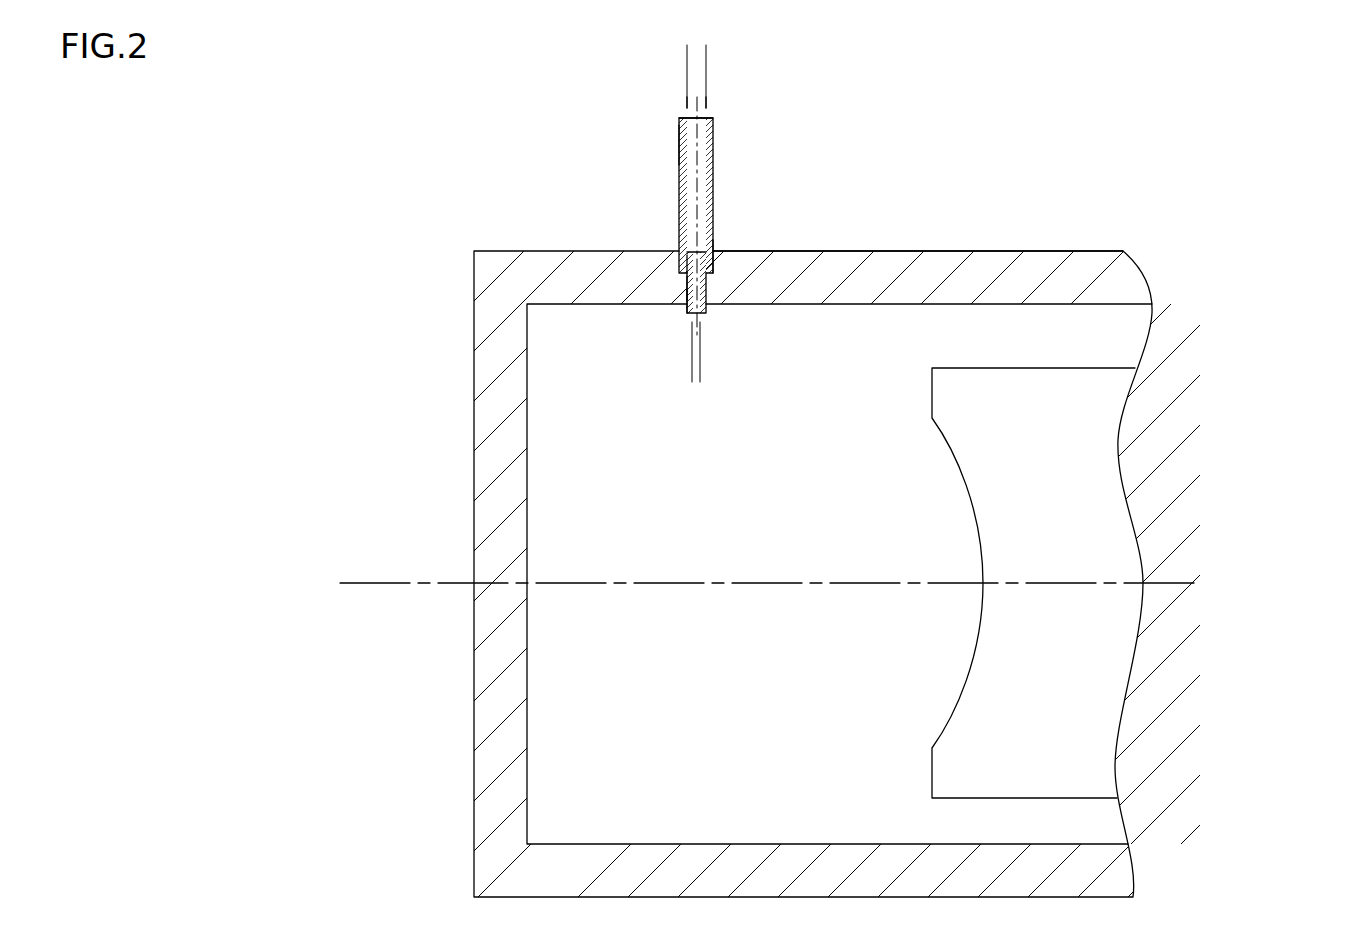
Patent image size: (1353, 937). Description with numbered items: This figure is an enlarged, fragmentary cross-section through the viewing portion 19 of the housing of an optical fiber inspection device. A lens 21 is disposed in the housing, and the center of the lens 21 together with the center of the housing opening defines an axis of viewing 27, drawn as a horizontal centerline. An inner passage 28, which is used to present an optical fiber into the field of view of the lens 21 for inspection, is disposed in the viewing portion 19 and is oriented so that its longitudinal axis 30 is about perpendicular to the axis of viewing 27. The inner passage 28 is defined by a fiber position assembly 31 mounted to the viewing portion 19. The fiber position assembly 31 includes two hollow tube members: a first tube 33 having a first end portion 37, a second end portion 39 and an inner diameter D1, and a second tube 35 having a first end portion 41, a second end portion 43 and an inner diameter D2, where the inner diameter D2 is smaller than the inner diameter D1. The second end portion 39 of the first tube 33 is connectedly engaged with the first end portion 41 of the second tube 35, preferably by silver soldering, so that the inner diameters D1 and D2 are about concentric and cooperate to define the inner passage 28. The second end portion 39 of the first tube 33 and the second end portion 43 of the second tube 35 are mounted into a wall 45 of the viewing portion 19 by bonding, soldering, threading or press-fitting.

The viewing portion 19 is at (540, 236).
The lens 21 is at (1090, 772).
The axis of viewing 27 is at (1185, 583).
The inner passage 28 is at (690, 130).
The longitudinal axis 30 is at (703, 298).
The fiber position assembly 31 is at (845, 155).
The first tube 33 is at (715, 140).
The second tube 35 is at (687, 296).
The first end portion 37 is at (678, 142).
The second end portion 39 is at (713, 264).
The first end portion 41 is at (687, 265).
The second end portion 43 is at (686, 286).
The wall 45 is at (1022, 275).
The inner diameter D1 is at (638, 63).
The inner diameter D2 is at (640, 373).